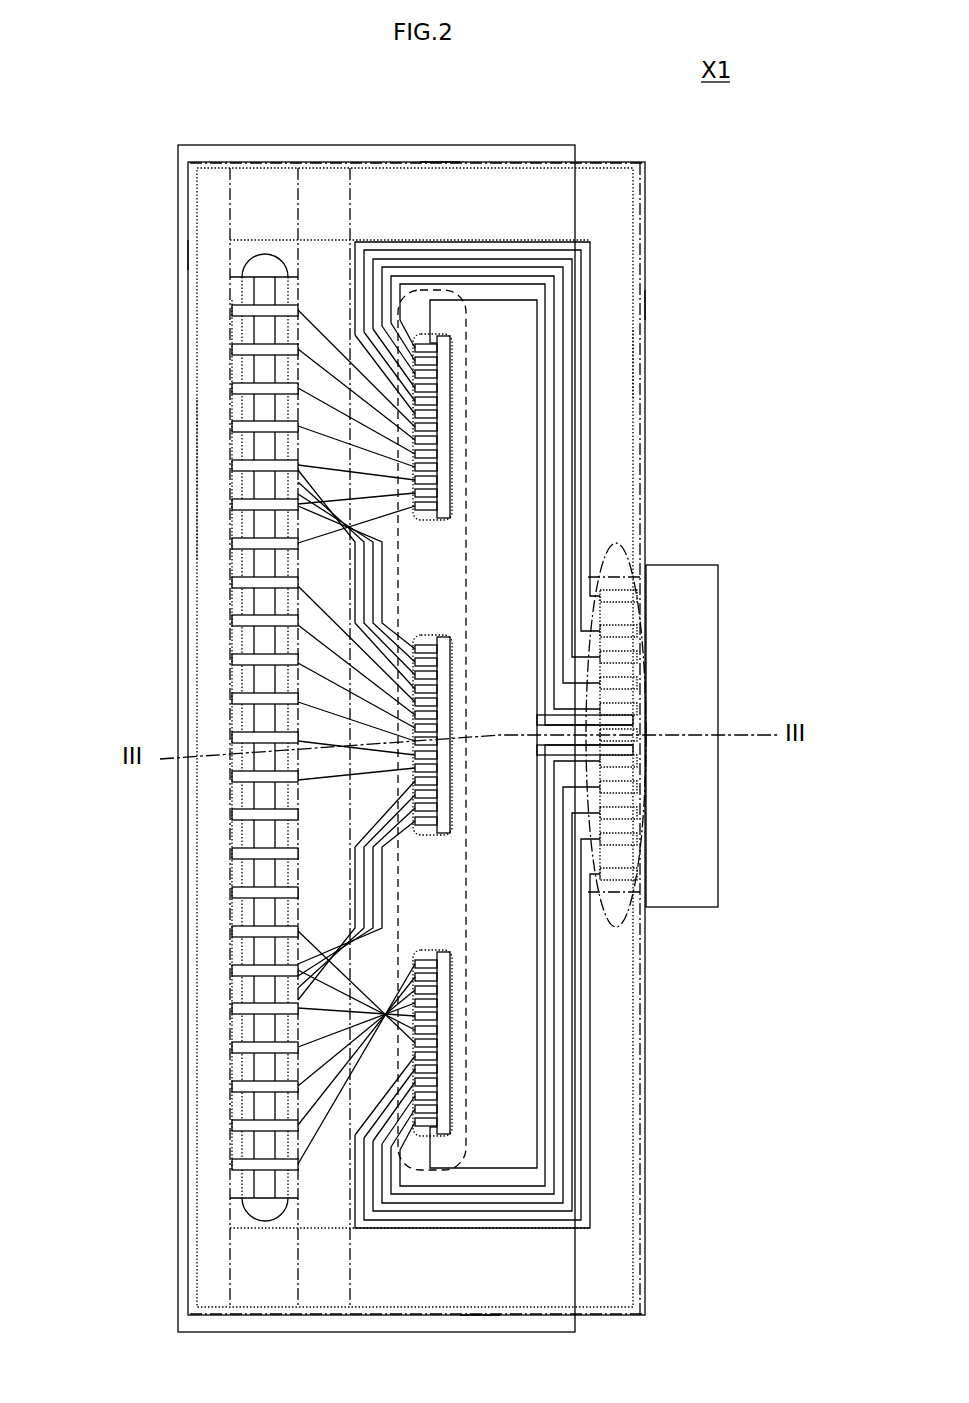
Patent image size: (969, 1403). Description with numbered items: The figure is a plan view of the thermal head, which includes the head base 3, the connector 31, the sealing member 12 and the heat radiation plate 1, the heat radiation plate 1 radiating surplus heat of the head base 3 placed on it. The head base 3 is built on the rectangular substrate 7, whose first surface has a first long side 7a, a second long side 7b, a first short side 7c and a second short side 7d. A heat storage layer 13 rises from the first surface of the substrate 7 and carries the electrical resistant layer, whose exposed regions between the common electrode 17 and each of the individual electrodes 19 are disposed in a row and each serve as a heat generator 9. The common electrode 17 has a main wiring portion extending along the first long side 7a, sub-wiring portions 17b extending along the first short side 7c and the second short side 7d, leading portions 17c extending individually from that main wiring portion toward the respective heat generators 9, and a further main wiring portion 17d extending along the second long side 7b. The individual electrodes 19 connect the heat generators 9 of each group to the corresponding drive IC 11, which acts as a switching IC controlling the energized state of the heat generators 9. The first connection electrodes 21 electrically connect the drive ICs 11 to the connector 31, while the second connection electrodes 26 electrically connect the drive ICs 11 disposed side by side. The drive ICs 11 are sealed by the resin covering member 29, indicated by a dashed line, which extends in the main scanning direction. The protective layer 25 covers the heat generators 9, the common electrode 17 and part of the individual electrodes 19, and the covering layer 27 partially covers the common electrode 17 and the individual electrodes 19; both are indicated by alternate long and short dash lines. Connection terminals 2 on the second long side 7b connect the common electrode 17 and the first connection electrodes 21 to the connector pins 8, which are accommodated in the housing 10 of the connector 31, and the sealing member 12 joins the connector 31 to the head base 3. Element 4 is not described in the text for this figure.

The heat radiation plate 1 is at (188, 878).
The connection terminals 2 is at (652, 880).
The head base 3 is at (466, 126).
The driver chip 4 is at (522, 1068).
The substrate 7 is at (325, 165).
The first long side 7a is at (195, 252).
The second long side 7b is at (648, 300).
The first short side 7c is at (440, 163).
The second short side 7d is at (481, 1312).
The connector pins 8 is at (620, 640).
The heat generator 9 is at (265, 330).
The housing 10 is at (700, 765).
The drive ICs 11 is at (445, 505).
The sealing member 12 is at (648, 585).
The heat storage layer 13 is at (240, 255).
The common electrode 17 is at (205, 482).
The sub-wiring portions 17b is at (392, 200).
The leading portions 17c is at (232, 440).
The main wiring portion 17d is at (615, 360).
The individual electrodes 19 is at (315, 1000).
The first connection electrodes 21 is at (530, 248).
The protective layer 25 is at (265, 190).
The second connection electrodes 26 is at (300, 520).
The covering layer 27 is at (213, 195).
The covering member 29 is at (470, 468).
The connector 31 is at (737, 735).